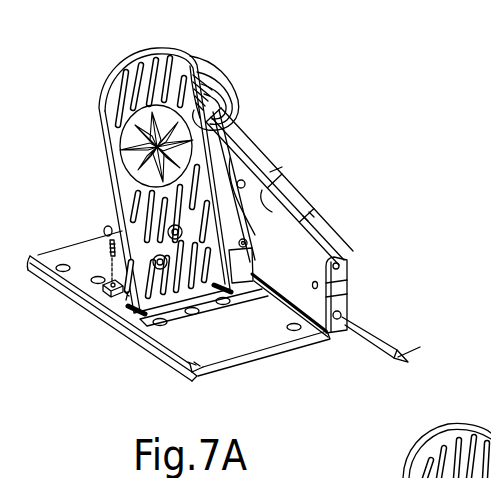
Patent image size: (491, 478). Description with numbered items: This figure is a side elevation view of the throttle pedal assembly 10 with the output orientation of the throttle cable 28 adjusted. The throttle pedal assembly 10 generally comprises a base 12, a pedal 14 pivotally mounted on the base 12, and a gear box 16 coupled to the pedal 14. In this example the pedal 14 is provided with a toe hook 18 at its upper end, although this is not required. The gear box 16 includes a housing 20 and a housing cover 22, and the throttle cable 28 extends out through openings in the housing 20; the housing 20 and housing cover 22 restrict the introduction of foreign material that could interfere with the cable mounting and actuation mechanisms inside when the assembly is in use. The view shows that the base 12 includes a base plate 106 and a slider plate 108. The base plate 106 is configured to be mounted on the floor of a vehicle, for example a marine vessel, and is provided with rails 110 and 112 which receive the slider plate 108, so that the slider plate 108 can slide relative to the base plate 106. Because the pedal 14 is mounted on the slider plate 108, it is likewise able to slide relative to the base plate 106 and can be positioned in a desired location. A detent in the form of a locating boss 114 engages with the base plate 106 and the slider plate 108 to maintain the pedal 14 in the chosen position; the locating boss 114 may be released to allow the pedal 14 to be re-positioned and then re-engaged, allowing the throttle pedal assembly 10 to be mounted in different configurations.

The throttle pedal assembly 10 is at (72, 176).
The base 12 is at (236, 368).
The pedal 14 is at (172, 58).
The gear box 16 is at (287, 188).
The toe hook 18 is at (244, 100).
The housing 20 is at (278, 176).
The housing cover 22 is at (308, 226).
The throttle cable 28 is at (385, 337).
The base plate 106 is at (203, 349).
The slider plate 108 is at (230, 312).
The rail 110 is at (107, 325).
The rail 112 is at (342, 338).
The locating boss 114 is at (107, 230).